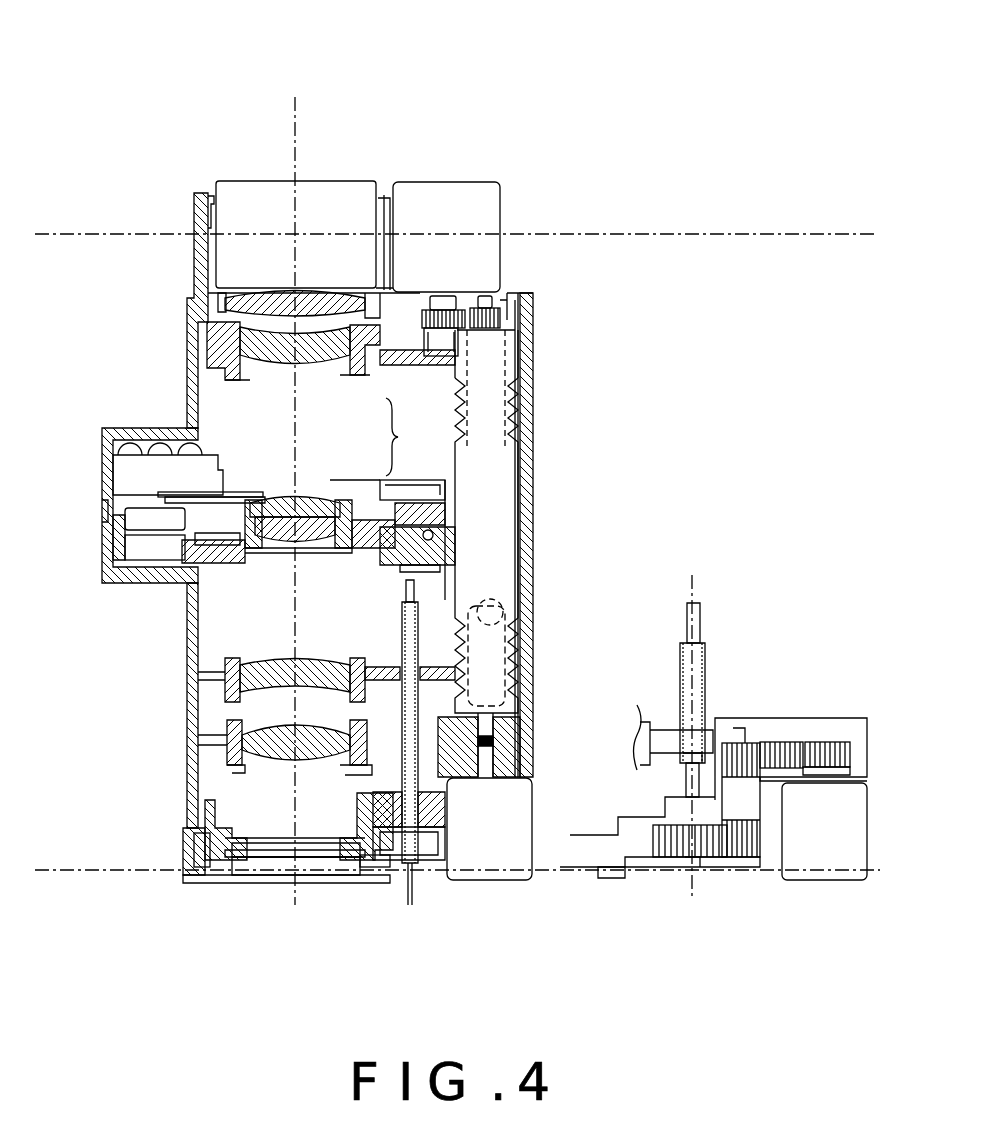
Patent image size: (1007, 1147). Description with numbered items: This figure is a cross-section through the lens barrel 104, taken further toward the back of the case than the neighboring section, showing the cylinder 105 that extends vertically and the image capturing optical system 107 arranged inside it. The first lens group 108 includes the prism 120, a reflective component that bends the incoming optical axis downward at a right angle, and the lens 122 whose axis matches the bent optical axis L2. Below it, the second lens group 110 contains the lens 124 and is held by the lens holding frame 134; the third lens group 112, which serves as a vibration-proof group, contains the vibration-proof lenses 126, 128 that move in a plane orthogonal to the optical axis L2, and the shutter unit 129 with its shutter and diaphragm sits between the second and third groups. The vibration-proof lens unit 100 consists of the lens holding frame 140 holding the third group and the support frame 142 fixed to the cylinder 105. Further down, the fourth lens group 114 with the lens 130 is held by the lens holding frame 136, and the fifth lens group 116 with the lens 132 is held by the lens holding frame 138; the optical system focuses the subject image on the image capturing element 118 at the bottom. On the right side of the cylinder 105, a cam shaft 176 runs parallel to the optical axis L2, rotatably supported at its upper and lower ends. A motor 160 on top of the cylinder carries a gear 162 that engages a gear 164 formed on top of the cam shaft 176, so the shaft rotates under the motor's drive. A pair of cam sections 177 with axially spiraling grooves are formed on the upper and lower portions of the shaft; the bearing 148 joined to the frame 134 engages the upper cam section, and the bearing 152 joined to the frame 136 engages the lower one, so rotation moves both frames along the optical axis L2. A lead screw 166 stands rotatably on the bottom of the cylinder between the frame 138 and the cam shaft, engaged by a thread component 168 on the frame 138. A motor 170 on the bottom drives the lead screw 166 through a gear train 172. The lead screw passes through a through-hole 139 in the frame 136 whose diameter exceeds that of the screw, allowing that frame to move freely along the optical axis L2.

The lens barrel 104 is at (162, 27).
The optical axis L2 is at (291, 108).
The cylinder 105 is at (193, 205).
The image capturing optical system 107 is at (237, 166).
The first lens group 108 is at (373, 176).
The prism 120 is at (322, 198).
The motor 160 is at (453, 180).
The gear 162 is at (460, 305).
The gear 164 is at (488, 310).
The bearing 148 is at (520, 346).
The cam sections 177 is at (505, 408).
The cam shaft 176 is at (520, 522).
The lens 122 is at (275, 297).
The lens 124 is at (195, 345).
The second lens group 110 is at (265, 352).
The lens holding frame 134 is at (232, 360).
The third lens group 112 is at (282, 480).
The vibration-proof lens 126 is at (292, 500).
The vibration-proof lens 128 is at (298, 528).
The shutter unit 129 is at (428, 480).
The lens holding frame 140 is at (445, 505).
The vibration-proof lens unit 100 is at (448, 527).
The support frame 142 is at (455, 558).
The bearing 152 is at (502, 612).
The lens 130 is at (195, 645).
The fourth lens group 114 is at (290, 655).
The lens holding frame 136 is at (225, 668).
The through-hole 139 is at (362, 647).
The lead screw 166 is at (402, 648).
The lens 132 is at (197, 731).
The fifth lens group 116 is at (260, 740).
The lens holding frame 138 is at (232, 735).
The thread component 168 is at (494, 740).
The image capturing element 118 is at (270, 885).
The motor 170 is at (508, 882).
The gear train 172 is at (412, 880).